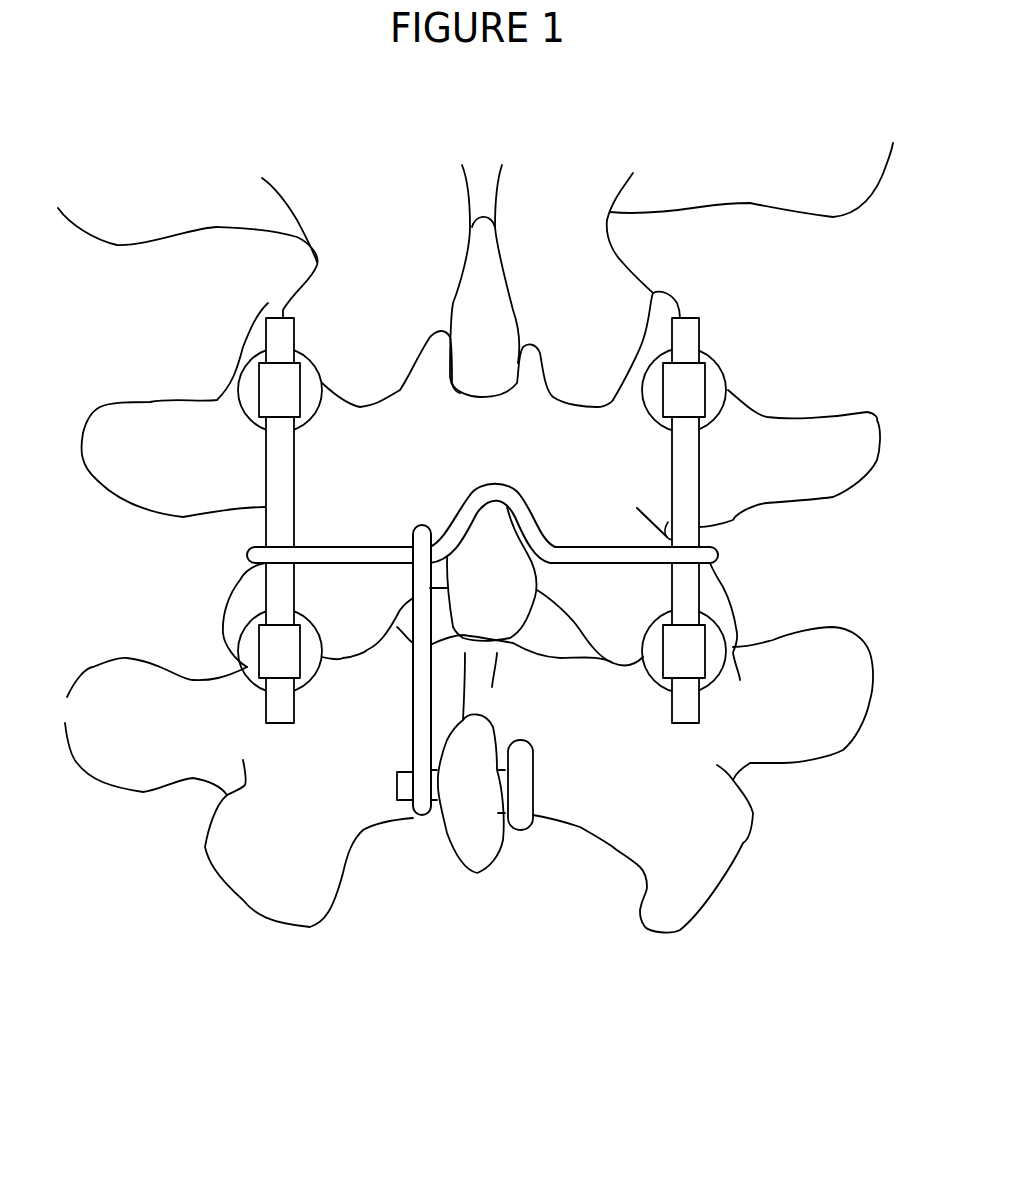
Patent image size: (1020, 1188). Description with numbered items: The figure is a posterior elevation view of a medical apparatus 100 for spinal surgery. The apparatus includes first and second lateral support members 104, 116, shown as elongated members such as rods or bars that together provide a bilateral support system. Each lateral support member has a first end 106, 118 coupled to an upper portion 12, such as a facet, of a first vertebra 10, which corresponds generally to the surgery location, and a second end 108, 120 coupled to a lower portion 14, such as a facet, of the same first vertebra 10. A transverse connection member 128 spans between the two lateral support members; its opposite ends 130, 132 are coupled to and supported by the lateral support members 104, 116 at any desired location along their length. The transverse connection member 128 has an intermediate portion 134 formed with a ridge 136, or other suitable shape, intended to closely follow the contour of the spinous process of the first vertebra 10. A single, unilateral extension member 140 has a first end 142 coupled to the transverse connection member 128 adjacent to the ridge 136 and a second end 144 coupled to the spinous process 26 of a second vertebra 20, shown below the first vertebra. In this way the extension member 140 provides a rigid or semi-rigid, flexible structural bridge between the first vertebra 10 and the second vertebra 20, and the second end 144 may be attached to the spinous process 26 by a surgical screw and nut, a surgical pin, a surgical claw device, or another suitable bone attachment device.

The medical apparatus 100 is at (728, 228).
The first vertebra 10 is at (420, 428).
The upper portion 12 is at (248, 353).
The lower portion 14 is at (368, 638).
The second vertebra 20 is at (337, 890).
The spinous process 26 is at (490, 860).
The first lateral support member 104 is at (226, 520).
The first end 106 is at (272, 342).
The second end 108 is at (270, 708).
The second lateral support member 116 is at (732, 490).
The first end 118 is at (697, 332).
The second end 120 is at (698, 713).
The transverse connection member 128 is at (600, 547).
The end of transverse connection member 130 is at (482, 424).
The end of transverse connection member 132 is at (667, 547).
The intermediate portion 134 is at (553, 518).
The ridge 136 is at (492, 478).
The extension member 140 is at (420, 752).
The first end 142 is at (410, 582).
The second end 144 is at (443, 860).